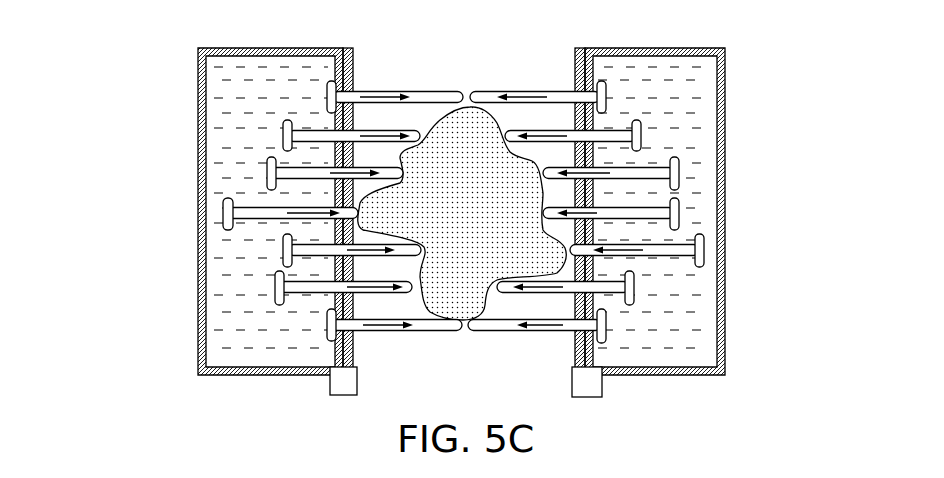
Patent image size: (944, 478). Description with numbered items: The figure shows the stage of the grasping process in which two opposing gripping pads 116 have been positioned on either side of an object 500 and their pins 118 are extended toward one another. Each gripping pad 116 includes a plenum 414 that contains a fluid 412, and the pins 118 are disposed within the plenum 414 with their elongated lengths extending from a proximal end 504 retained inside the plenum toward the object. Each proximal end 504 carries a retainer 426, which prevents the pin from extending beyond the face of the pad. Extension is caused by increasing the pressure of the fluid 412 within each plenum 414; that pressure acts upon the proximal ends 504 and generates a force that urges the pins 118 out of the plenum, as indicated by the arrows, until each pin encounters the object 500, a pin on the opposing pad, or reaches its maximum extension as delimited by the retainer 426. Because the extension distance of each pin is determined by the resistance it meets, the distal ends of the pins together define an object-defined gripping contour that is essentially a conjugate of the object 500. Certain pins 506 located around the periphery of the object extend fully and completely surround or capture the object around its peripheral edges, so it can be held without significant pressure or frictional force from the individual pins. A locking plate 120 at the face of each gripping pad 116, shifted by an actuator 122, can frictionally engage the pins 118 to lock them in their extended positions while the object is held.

The gripping pad 116 is at (203, 313).
The pin 118 is at (358, 132).
The locking plate 120 is at (353, 357).
The actuator 122 is at (357, 384).
The fluid 412 is at (328, 365).
The plenum 414 is at (220, 78).
The retainer 426 is at (331, 80).
The object 500 is at (482, 222).
The proximal end 504 is at (265, 174).
The pins located around a periphery of an object 506 is at (482, 90).